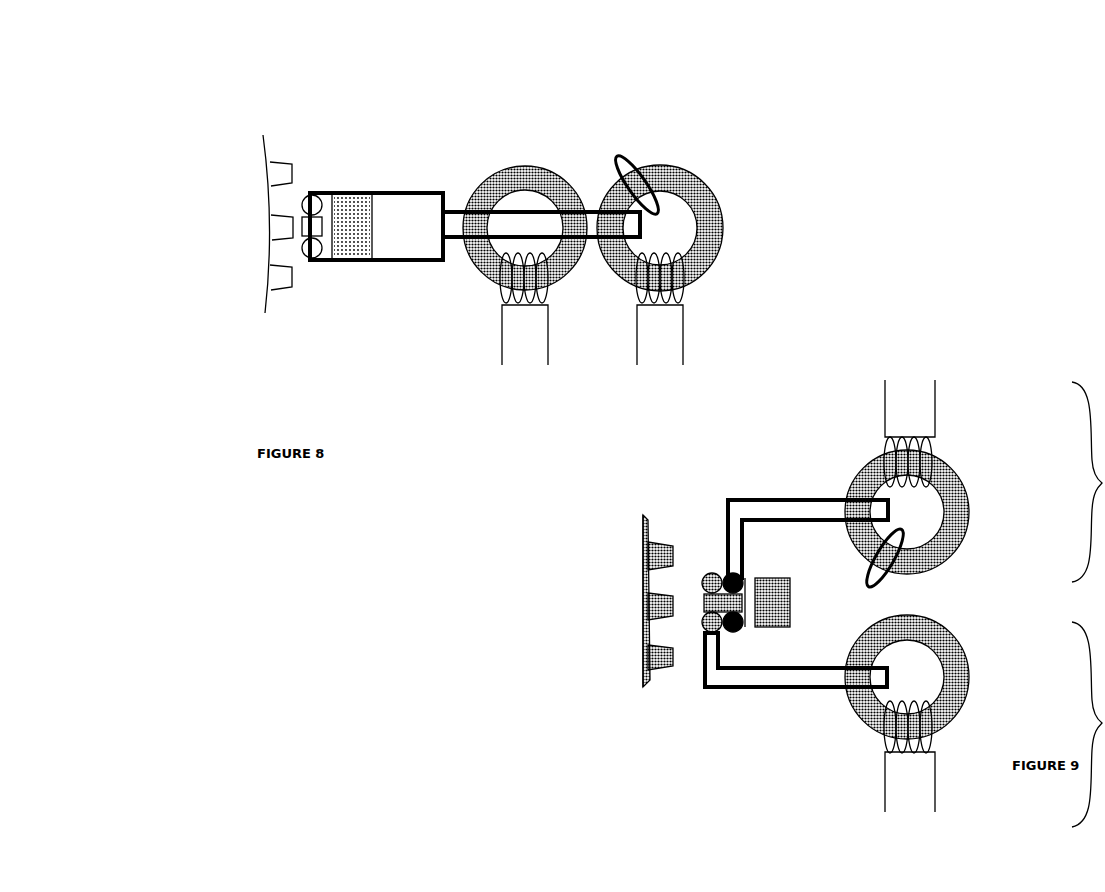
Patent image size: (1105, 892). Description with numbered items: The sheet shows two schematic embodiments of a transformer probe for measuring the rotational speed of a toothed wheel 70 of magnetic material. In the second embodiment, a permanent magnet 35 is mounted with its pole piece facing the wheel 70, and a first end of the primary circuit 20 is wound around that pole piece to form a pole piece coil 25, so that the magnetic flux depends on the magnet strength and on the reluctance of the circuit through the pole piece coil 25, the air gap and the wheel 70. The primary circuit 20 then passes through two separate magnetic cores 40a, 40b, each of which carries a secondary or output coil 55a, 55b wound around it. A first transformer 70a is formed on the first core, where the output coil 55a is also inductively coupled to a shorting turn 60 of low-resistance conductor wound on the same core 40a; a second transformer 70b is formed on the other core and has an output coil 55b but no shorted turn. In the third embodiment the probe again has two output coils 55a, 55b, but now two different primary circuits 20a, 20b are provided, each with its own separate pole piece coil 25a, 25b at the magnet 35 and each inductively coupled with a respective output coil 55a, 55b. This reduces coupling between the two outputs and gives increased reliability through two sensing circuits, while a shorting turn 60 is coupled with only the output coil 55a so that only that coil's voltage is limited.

In FIG. 8, the primary circuit 20 is at (390, 262).
In FIG. 9, the first primary circuit 20a is at (808, 498).
In FIG. 9, the second primary circuit 20b is at (793, 692).
In FIG. 8, the pole piece coil 25 is at (297, 225).
In FIG. 9, the first pole piece coil 25a is at (733, 575).
In FIG. 9, the second pole piece coil 25b is at (705, 628).
In FIG. 8, the permanent magnet 35 is at (347, 215).
In FIG. 9, the permanent magnet 35 is at (772, 578).
In FIG. 8, the first magnetic core 40a is at (718, 203).
In FIG. 9, the first magnetic core 40a is at (957, 492).
In FIG. 9, the second magnetic core 40b is at (957, 670).
In FIG. 8, the first output coil 55a is at (683, 343).
In FIG. 9, the first output coil 55a is at (935, 412).
In FIG. 8, the second output coil 55b is at (502, 345).
In FIG. 9, the second output coil 55b is at (935, 797).
In FIG. 8, the shorting turn 60 is at (632, 162).
In FIG. 9, the shorting turn 60 is at (890, 578).
In FIG. 8, the toothed wheel 70 is at (275, 312).
In FIG. 9, the toothed wheel 70 is at (645, 692).
In FIG. 8, the first transformer 70a is at (706, 180).
In FIG. 8, the second transformer 70b is at (513, 180).